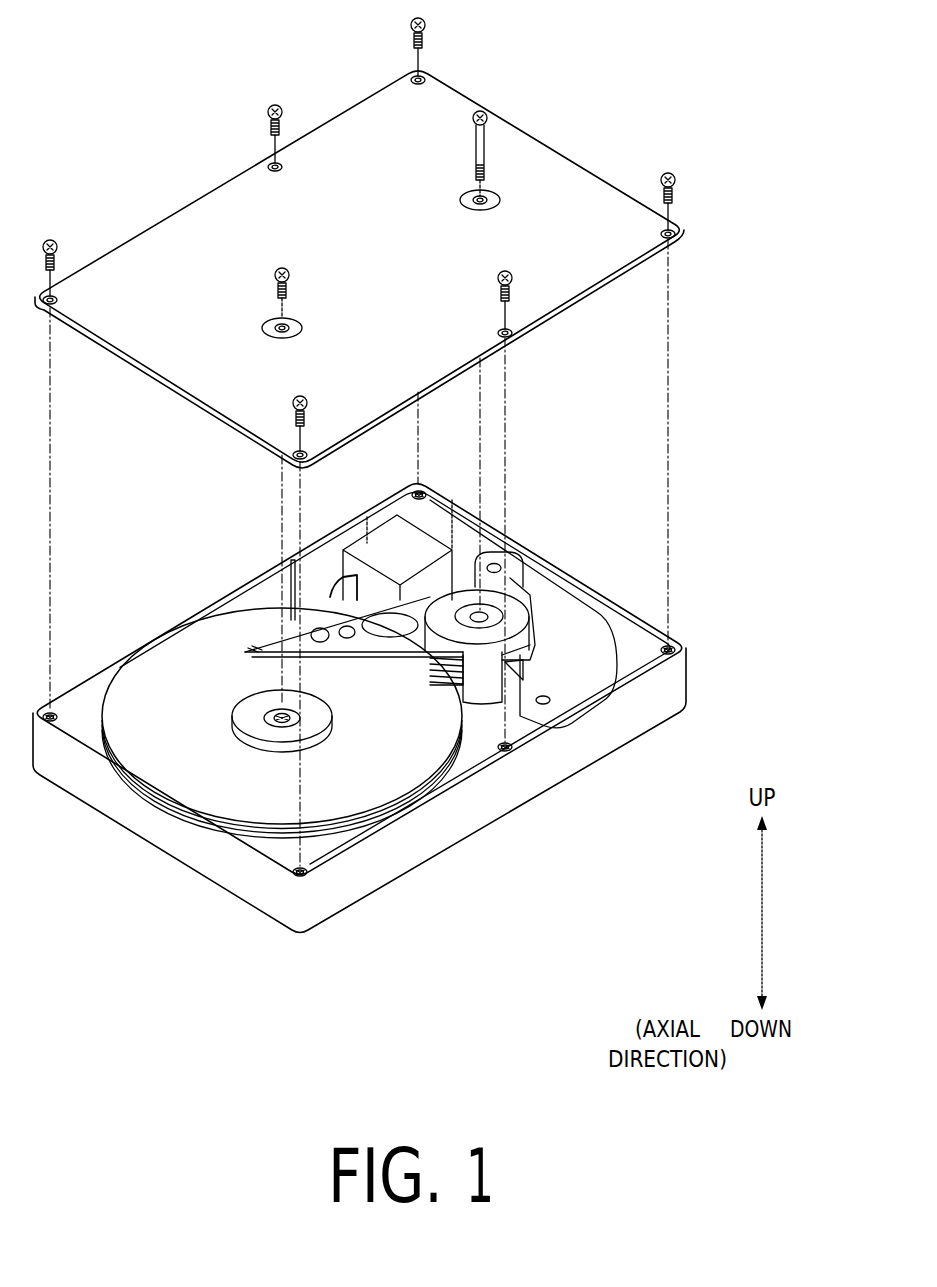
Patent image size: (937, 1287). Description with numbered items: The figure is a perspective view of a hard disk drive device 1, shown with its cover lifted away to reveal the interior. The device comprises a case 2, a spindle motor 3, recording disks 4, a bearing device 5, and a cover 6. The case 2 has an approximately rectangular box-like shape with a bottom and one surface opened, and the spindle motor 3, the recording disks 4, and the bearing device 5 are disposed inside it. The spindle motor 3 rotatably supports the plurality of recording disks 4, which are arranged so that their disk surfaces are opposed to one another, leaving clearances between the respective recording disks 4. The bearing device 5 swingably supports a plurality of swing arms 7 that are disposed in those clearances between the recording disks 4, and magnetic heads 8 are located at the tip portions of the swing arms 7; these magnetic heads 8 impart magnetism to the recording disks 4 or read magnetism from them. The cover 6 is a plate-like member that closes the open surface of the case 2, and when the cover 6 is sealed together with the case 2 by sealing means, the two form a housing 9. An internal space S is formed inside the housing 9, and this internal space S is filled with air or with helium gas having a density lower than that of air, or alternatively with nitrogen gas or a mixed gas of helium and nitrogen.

The hard disk drive device 1 is at (84, 104).
The case 2 is at (660, 693).
The spindle motor 3 is at (253, 728).
The recording disks 4 is at (360, 778).
The bearing device 5 is at (477, 624).
The cover 6 is at (590, 275).
The swing arms 7 is at (288, 596).
The magnetic heads 8 is at (272, 636).
The housing 9 is at (762, 353).
The internal space S is at (467, 716).